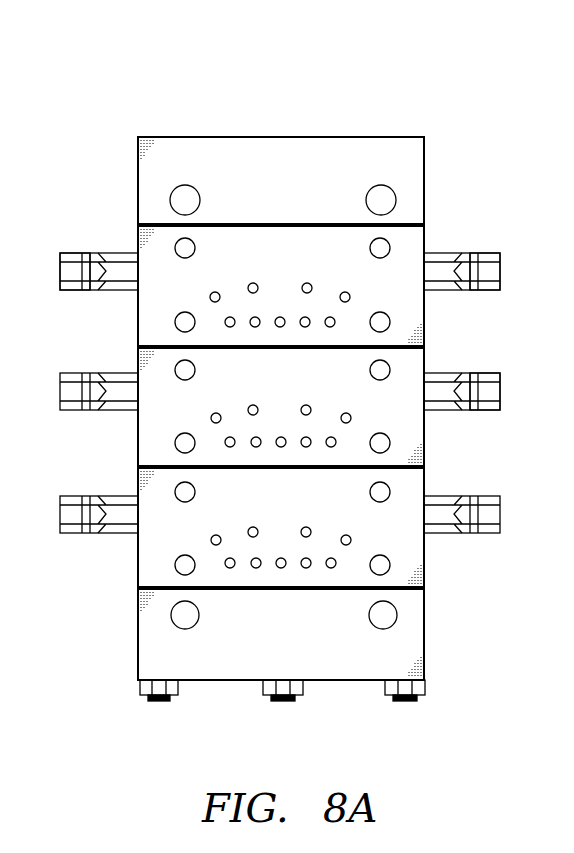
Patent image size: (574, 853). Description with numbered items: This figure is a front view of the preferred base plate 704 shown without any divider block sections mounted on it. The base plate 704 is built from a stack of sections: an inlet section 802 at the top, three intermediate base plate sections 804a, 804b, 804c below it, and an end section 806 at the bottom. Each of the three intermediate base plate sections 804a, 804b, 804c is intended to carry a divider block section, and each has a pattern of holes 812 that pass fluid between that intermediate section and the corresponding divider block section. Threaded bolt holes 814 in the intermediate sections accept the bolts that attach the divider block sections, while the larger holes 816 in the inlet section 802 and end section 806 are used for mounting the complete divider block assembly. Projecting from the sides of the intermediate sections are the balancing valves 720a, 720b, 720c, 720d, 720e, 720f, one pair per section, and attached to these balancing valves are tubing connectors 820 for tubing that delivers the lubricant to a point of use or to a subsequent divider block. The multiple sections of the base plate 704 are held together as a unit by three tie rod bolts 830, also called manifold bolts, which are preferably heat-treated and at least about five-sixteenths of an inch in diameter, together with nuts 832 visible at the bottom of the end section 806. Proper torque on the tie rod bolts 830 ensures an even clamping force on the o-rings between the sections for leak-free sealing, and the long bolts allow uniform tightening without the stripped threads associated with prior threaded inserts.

The base plate 704 is at (144, 53).
The inlet section 802 is at (258, 137).
The intermediate base plate section 804a is at (432, 240).
The intermediate base plate section 804b is at (432, 442).
The intermediate base plate section 804c is at (432, 590).
The end section 806 is at (432, 650).
The holes 812 is at (345, 297).
The threaded bolt holes 814 is at (177, 500).
The holes 816 is at (172, 193).
The balancing valve 720a is at (112, 252).
The balancing valve 720b is at (455, 252).
The balancing valve 720c is at (112, 373).
The balancing valve 720d is at (455, 373).
The balancing valve 720e is at (112, 497).
The balancing valve 720f is at (455, 493).
The tubing connector 820 is at (75, 253).
The tie rod bolt 830 is at (152, 701).
The nut 832 is at (140, 688).